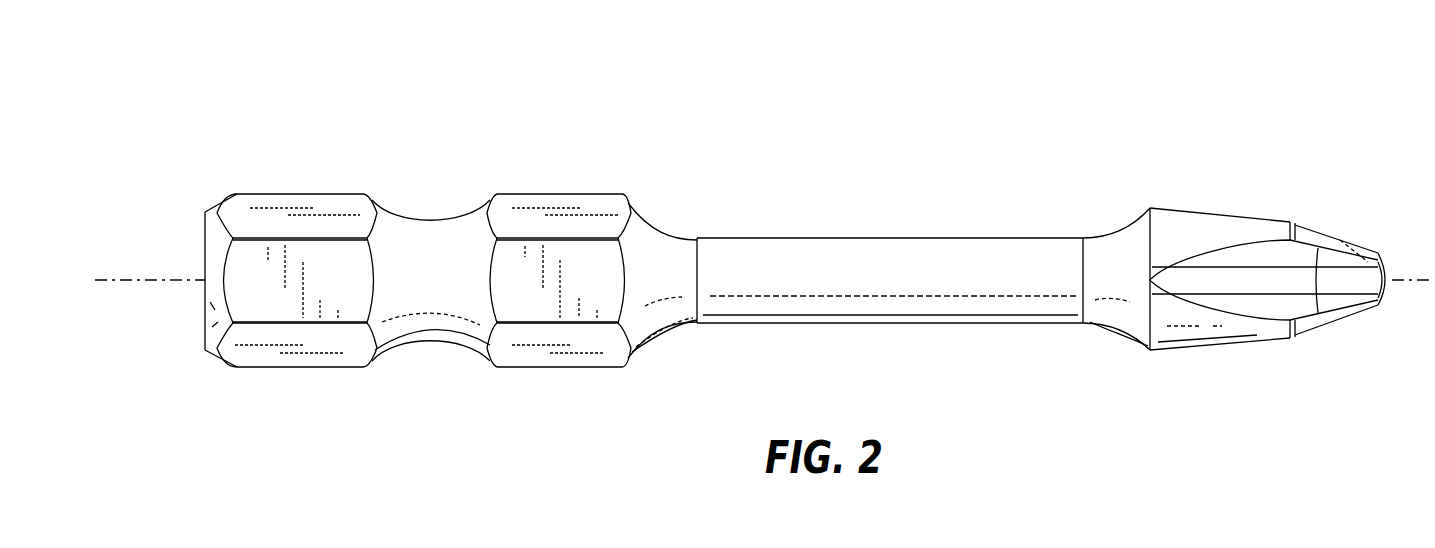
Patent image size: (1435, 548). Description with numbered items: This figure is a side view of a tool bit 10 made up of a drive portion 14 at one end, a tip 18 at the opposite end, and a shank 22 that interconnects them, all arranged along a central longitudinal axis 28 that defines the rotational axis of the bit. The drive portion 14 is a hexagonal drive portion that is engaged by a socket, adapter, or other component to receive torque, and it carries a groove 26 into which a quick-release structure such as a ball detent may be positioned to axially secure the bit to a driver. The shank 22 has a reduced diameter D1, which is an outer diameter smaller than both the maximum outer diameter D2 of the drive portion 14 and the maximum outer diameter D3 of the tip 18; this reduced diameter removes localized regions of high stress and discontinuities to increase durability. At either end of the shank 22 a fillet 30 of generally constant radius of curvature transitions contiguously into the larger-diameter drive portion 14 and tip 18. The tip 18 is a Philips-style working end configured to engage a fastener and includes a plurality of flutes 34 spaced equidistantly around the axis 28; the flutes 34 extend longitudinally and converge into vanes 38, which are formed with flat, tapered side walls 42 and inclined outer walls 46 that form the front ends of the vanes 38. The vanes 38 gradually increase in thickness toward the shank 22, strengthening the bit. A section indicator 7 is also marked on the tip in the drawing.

The tool bit 10 is at (608, 72).
The drive portion 14 is at (335, 162).
The tip 18 is at (1305, 165).
The shank 22 is at (823, 237).
The groove 26 is at (440, 222).
The central longitudinal axis 28 is at (168, 280).
The fillet 30 is at (663, 224).
The flute 34 is at (1343, 283).
The vane 38 is at (1193, 210).
The tapered side wall 42 is at (1238, 262).
The outer wall 46 is at (1323, 242).
The section line 7- 7 is at (1340, 229).
The reduced diameter D1 is at (958, 370).
The maximum outer diameter of the drive portion D2 is at (253, 408).
The maximum outer diameter of the tip D3 is at (1170, 350).